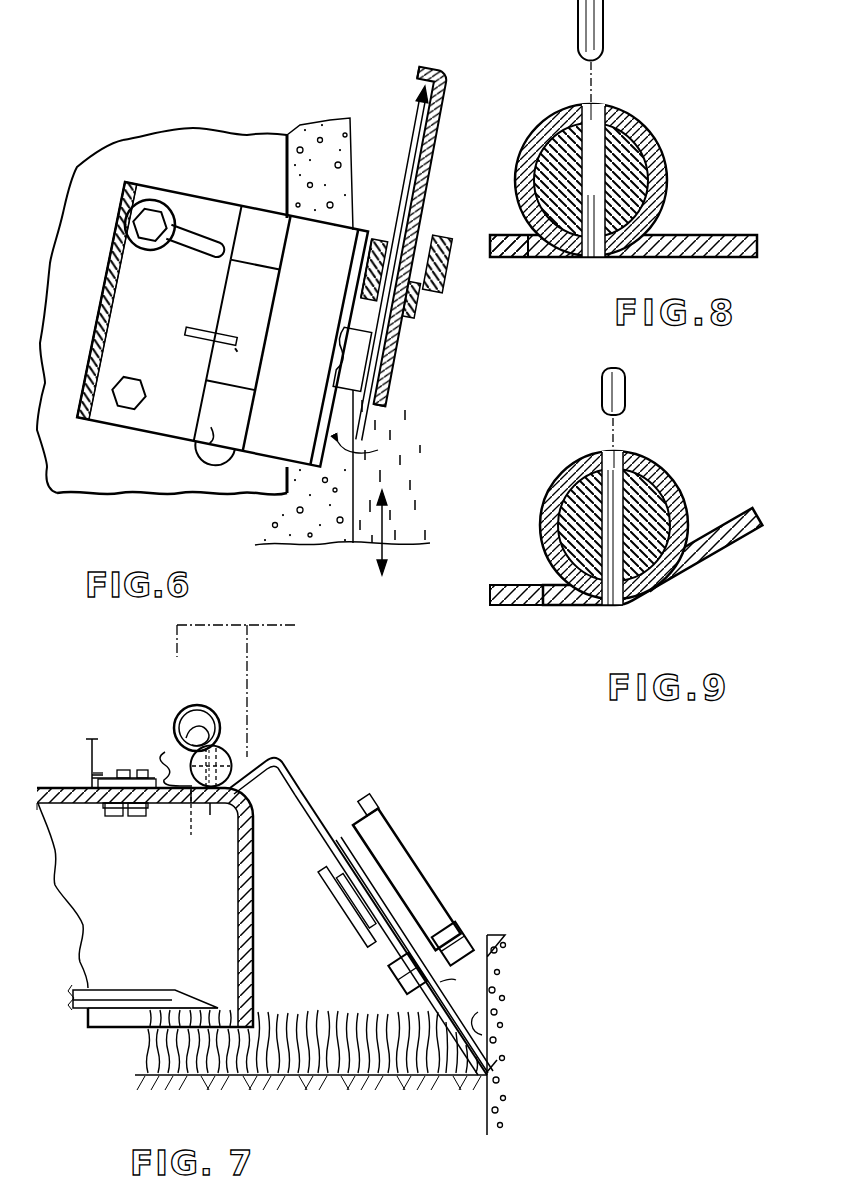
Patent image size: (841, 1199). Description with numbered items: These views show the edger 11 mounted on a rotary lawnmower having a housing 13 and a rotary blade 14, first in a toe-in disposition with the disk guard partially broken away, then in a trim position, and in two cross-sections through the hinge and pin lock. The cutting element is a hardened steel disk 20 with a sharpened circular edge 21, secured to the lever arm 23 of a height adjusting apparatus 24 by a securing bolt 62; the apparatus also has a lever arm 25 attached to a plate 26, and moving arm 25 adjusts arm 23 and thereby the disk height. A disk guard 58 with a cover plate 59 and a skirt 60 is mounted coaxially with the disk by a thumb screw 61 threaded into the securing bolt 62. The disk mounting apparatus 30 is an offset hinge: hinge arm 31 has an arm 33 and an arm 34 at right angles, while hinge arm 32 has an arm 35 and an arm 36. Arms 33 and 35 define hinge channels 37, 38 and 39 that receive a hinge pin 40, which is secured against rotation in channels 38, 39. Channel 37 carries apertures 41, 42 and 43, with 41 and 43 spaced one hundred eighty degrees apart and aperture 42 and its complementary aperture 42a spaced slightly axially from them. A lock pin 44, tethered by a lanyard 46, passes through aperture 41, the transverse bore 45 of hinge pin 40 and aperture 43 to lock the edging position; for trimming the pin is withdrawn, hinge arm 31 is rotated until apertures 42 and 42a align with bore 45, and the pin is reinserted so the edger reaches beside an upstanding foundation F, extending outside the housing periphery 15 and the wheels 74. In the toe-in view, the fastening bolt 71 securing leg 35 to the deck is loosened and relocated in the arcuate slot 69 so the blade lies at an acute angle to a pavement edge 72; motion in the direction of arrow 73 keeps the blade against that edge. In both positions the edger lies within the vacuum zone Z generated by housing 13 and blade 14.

In FIG. 6, the edger 11 is at (411, 230).
In FIG. 7, the edger 11 is at (452, 933).
In FIG. 6, the housing 13 is at (158, 152).
In FIG. 7, the housing 13 is at (62, 790).
In FIG. 7, the rotary blade 14 is at (136, 992).
In FIG. 6, the mower housing periphery 15 is at (302, 147).
In FIG. 7, the mower housing periphery 15 is at (254, 905).
In FIG. 6, the disk 20 is at (383, 382).
In FIG. 7, the disk 20 is at (455, 1005).
In FIG. 6, the sharpened circular edge 21 is at (365, 443).
In FIG. 7, the sharpened circular edge 21 is at (500, 1073).
In FIG. 6, the lever arm 23 is at (380, 245).
In FIG. 7, the lever arm 23 is at (416, 996).
In FIG. 7, the height adjusting apparatus 24 is at (376, 940).
In FIG. 6, the lever arm 25 is at (356, 342).
In FIG. 7, the lever arm 25 is at (390, 832).
In FIG. 6, the plate 26 is at (340, 360).
In FIG. 7, the plate 26 is at (340, 838).
In FIG. 6, the disk mounting apparatus 30 is at (212, 361).
In FIG. 7, the disk mounting apparatus 30 is at (154, 755).
In FIG. 6, the hinge arm 31 is at (258, 478).
In FIG. 8, the hinge arm 31 is at (636, 252).
In FIG. 9, the hinge arm 31 is at (632, 566).
In FIG. 7, the hinge arm 31 is at (358, 882).
In FIG. 6, the hinge arm 32 is at (118, 422).
In FIG. 8, the hinge arm 32 is at (511, 262).
In FIG. 9, the hinge arm 32 is at (512, 612).
In FIG. 7, the hinge arm 32 is at (92, 740).
In FIG. 6, the arm 33 is at (329, 289).
In FIG. 8, the arm 33 is at (714, 258).
In FIG. 9, the arm 33 is at (728, 540).
In FIG. 7, the arm 33 is at (258, 758).
In FIG. 7, the arm 34 is at (307, 800).
In FIG. 6, the arm 35 is at (162, 307).
In FIG. 8, the arm 35 is at (520, 237).
In FIG. 7, the arm 35 is at (165, 805).
In FIG. 6, the arm 36 is at (98, 325).
In FIG. 7, the arm 36 is at (75, 806).
In FIG. 6, the hinge channel 37 is at (268, 318).
In FIG. 8, the hinge channel 37 is at (660, 152).
In FIG. 9, the hinge channel 37 is at (660, 480).
In FIG. 6, the hinge channel 38 is at (232, 450).
In FIG. 6, the hinge channel 39 is at (262, 222).
In FIG. 6, the hinge pin 40 is at (182, 445).
In FIG. 8, the hinge pin 40 is at (632, 182).
In FIG. 9, the hinge pin 40 is at (578, 522).
In FIG. 7, the hinge pin 40 is at (243, 745).
In FIG. 8, the aperture 41 is at (598, 112).
In FIG. 9, the aperture 41 is at (582, 475).
In FIG. 6, the aperture 42 is at (262, 352).
In FIG. 8, the aperture 42 is at (630, 122).
In FIG. 9, the aperture 42 is at (622, 460).
In FIG. 7, the aperture 42 is at (214, 747).
In FIG. 8, the complementary aperture 42a is at (565, 255).
In FIG. 9, the complementary aperture 42a is at (613, 607).
In FIG. 7, the complementary aperture 42a is at (210, 820).
In FIG. 8, the aperture 43 is at (596, 258).
In FIG. 9, the aperture 43 is at (652, 592).
In FIG. 6, the lock pin 44 is at (242, 330).
In FIG. 8, the lock pin 44 is at (605, 22).
In FIG. 9, the lock pin 44 is at (628, 400).
In FIG. 7, the lock pin 44 is at (175, 708).
In FIG. 8, the bore 45 is at (590, 157).
In FIG. 9, the bore 45 is at (620, 520).
In FIG. 7, the lanyard 46 is at (148, 762).
In FIG. 6, the disk guard 58 is at (455, 85).
In FIG. 7, the disk guard 58 is at (418, 882).
In FIG. 6, the cover plate 59 is at (440, 148).
In FIG. 7, the cover plate 59 is at (444, 978).
In FIG. 6, the skirt 60 is at (422, 72).
In FIG. 7, the skirt 60 is at (386, 880).
In FIG. 6, the thumb screw 61 is at (446, 285).
In FIG. 7, the thumb screw 61 is at (432, 930).
In FIG. 6, the securing bolt 62 is at (420, 240).
In FIG. 7, the securing bolt 62 is at (450, 980).
In FIG. 6, the arcuate slot 69 is at (193, 225).
In FIG. 6, the fastening bolt 71 is at (148, 232).
In FIG. 7, the fastening bolt 71 is at (128, 777).
In FIG. 6, the edge 72 is at (352, 515).
In FIG. 6, the arrow 73 is at (388, 535).
In FIG. 7, the wheels 74 is at (249, 690).
In FIG. 7, the foundation F is at (482, 1025).
In FIG. 6, the vacuum zone Z is at (372, 453).